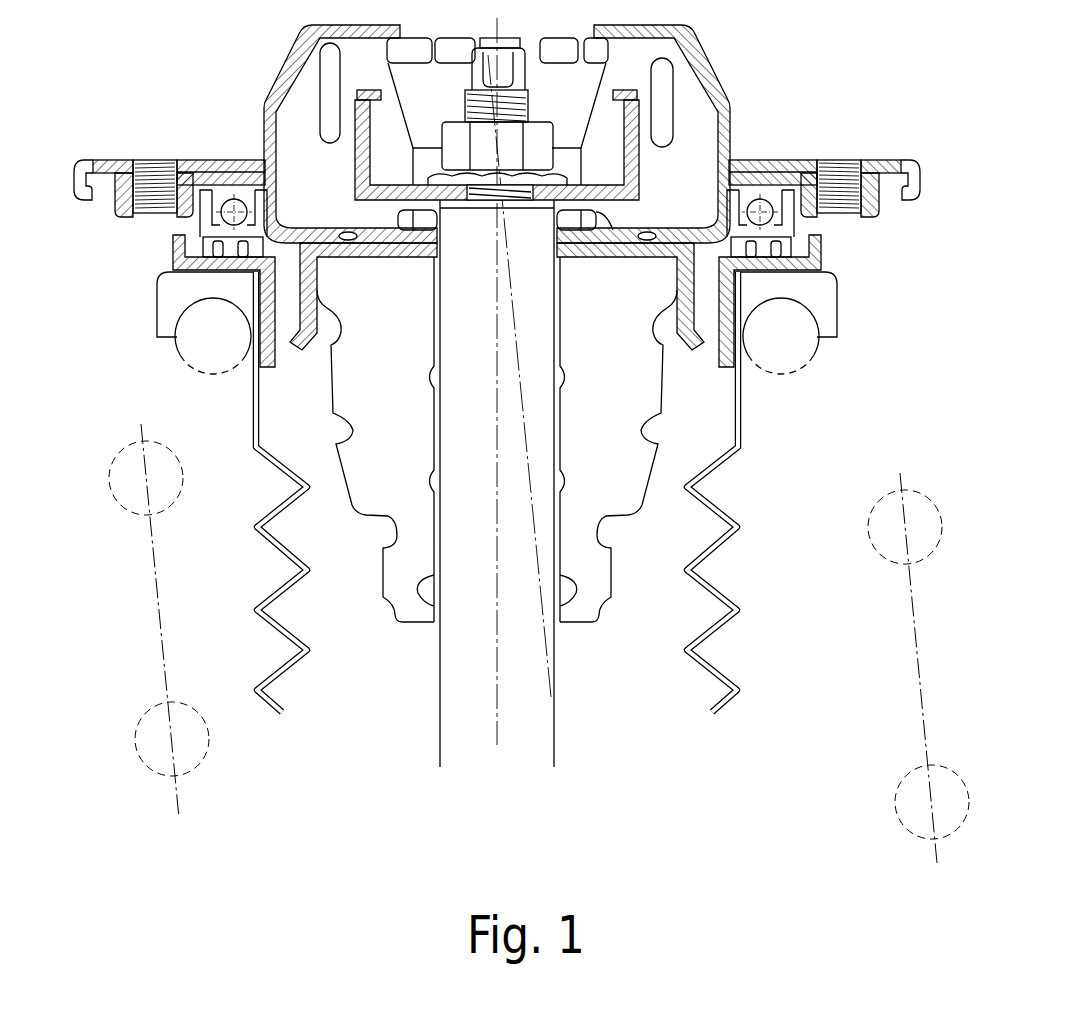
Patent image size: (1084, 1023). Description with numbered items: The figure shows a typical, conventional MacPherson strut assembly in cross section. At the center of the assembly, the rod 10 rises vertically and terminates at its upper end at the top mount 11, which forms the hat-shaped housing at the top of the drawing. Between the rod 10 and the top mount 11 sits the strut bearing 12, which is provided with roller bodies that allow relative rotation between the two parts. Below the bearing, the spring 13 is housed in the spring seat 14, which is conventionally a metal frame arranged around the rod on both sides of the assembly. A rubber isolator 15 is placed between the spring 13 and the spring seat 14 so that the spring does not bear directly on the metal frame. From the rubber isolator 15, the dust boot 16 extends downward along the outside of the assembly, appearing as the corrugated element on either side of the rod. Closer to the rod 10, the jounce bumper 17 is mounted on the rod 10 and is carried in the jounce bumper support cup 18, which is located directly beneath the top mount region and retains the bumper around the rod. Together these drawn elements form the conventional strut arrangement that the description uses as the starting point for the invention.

The rod 10 is at (438, 741).
The top mount 11 is at (733, 98).
The strut bearing 12 is at (228, 196).
The spring 13 is at (782, 348).
The spring seat 14 is at (170, 257).
The rubber isolator 15 is at (820, 288).
The dust boot 16 is at (742, 607).
The jounce bumper 17 is at (594, 597).
The jounce bumper support cup 18 is at (297, 352).